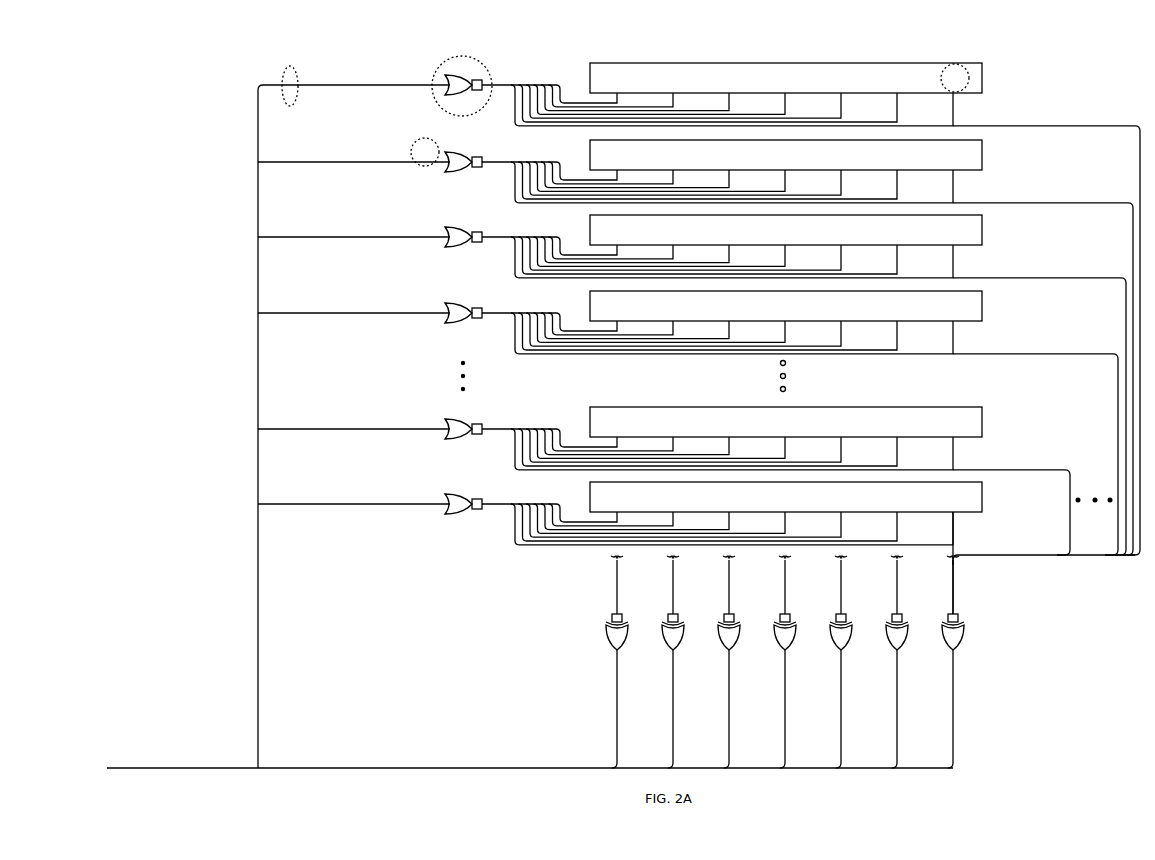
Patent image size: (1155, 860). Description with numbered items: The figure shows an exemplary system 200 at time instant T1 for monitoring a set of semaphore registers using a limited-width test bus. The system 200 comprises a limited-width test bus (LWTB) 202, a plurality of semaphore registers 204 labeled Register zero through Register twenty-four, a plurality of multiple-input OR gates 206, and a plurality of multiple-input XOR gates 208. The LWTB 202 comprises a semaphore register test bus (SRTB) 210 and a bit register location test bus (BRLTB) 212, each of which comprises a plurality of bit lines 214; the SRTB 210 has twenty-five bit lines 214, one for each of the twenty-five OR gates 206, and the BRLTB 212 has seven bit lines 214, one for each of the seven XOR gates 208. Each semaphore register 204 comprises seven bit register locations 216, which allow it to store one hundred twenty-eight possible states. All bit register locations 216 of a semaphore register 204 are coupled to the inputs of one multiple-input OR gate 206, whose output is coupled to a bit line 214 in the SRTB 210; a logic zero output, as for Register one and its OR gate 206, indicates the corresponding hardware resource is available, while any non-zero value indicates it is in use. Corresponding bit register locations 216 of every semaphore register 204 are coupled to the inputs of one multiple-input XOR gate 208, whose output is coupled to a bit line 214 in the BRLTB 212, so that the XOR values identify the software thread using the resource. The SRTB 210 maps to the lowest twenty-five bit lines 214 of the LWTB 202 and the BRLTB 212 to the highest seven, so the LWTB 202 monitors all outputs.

The exemplary system 200 is at (202, 351).
The limited-width test bus 202 is at (221, 750).
The semaphore register 204 is at (636, 63).
The multiple-input OR gate 206 is at (485, 60).
The multiple-input XOR gate 208 is at (970, 626).
The semaphore register test bus 210 is at (299, 648).
The bit register location test bus 212 is at (474, 765).
The bit line 214 is at (283, 83).
The bit register location 216 is at (968, 74).